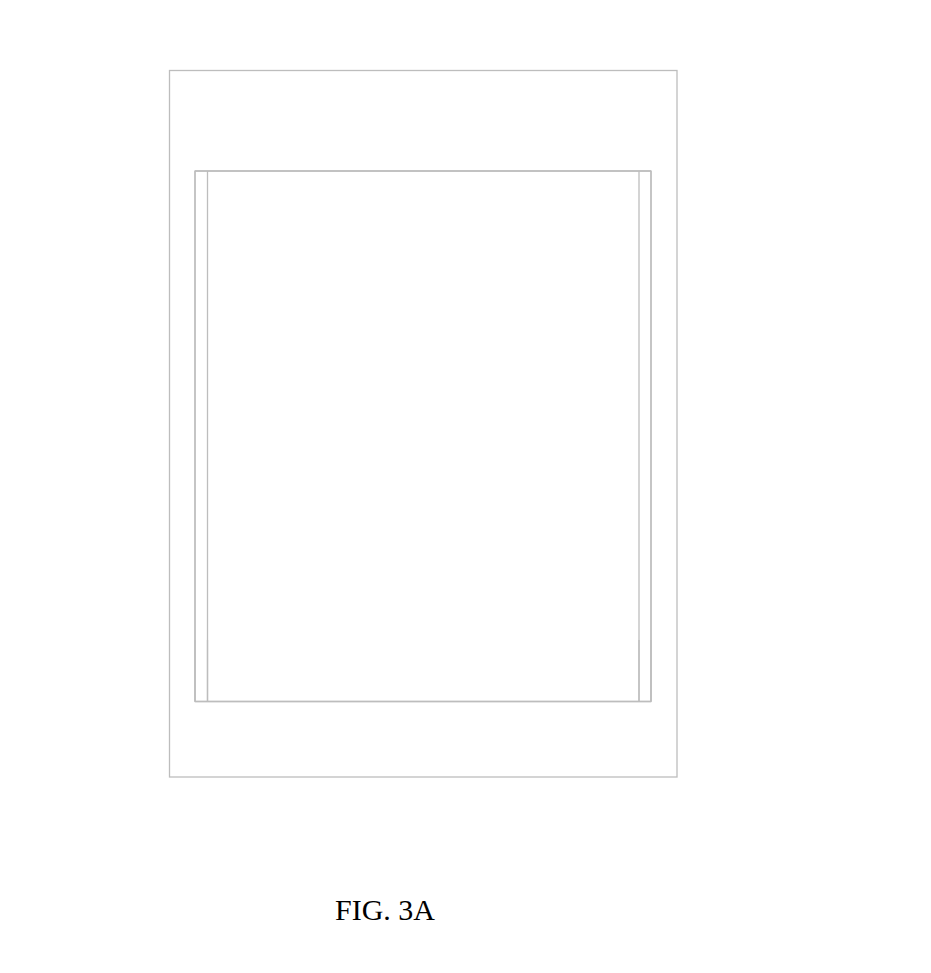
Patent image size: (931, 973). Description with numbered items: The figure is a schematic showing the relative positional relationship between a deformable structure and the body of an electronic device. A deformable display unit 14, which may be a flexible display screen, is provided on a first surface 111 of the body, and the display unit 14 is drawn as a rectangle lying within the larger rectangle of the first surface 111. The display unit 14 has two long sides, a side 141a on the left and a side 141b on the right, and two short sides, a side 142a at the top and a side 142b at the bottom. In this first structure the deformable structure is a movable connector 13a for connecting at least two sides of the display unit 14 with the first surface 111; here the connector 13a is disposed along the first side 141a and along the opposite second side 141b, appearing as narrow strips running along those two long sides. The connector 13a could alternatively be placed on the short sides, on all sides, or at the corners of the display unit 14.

The first surface 111 is at (208, 111).
The display unit 14 is at (615, 262).
The side 141a is at (208, 436).
The side 141b is at (638, 436).
The side 142a is at (547, 170).
The side 142b is at (423, 702).
The movable connector 13a is at (202, 652).